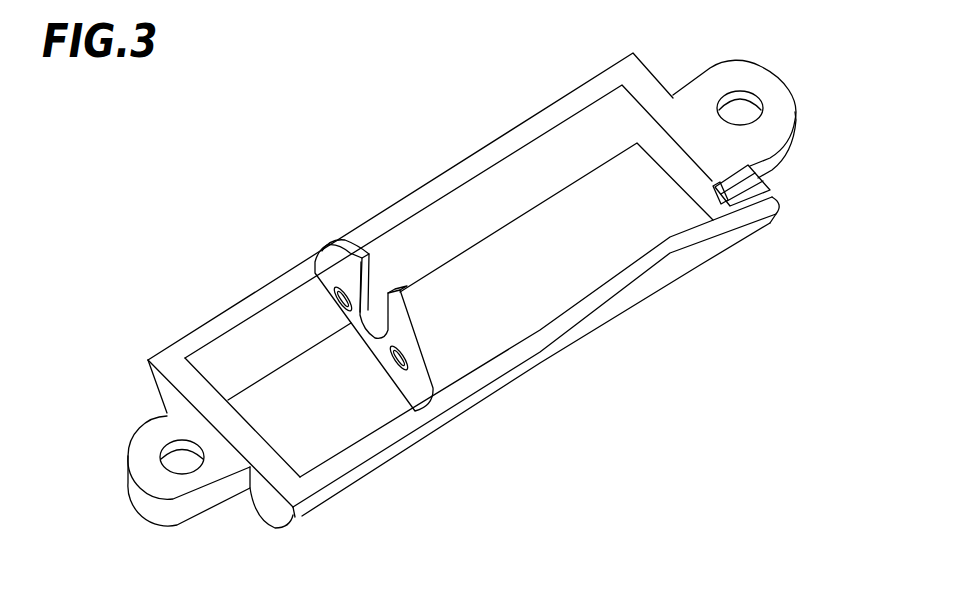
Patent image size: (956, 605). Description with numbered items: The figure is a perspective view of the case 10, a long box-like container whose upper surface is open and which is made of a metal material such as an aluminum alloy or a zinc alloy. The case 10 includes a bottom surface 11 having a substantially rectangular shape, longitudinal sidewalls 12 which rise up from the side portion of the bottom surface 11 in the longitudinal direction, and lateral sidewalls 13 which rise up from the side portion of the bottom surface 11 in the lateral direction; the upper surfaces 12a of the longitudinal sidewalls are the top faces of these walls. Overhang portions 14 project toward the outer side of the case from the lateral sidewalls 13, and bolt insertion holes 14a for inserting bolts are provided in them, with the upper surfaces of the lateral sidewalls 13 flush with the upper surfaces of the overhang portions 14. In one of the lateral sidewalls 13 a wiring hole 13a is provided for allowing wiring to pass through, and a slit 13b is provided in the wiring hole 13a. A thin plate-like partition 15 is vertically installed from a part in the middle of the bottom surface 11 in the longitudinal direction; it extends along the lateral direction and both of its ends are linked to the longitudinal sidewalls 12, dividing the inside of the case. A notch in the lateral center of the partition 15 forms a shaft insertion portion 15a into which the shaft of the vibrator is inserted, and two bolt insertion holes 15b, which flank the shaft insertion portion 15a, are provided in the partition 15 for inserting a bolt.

The case 10 is at (239, 147).
The bottom surface 11 is at (523, 317).
The longitudinal sidewall 12 is at (258, 335).
The upper surface of side wall 12a is at (478, 165).
The lateral sidewall 13 is at (638, 120).
The wiring hole 13a is at (714, 188).
The slit 13b is at (757, 166).
The overhang portion 14 is at (781, 97).
The bolt insertion hole 14a is at (180, 443).
The partition 15 is at (408, 387).
The shaft insertion portion 15a is at (378, 280).
The bolt insertion hole 15b is at (348, 314).